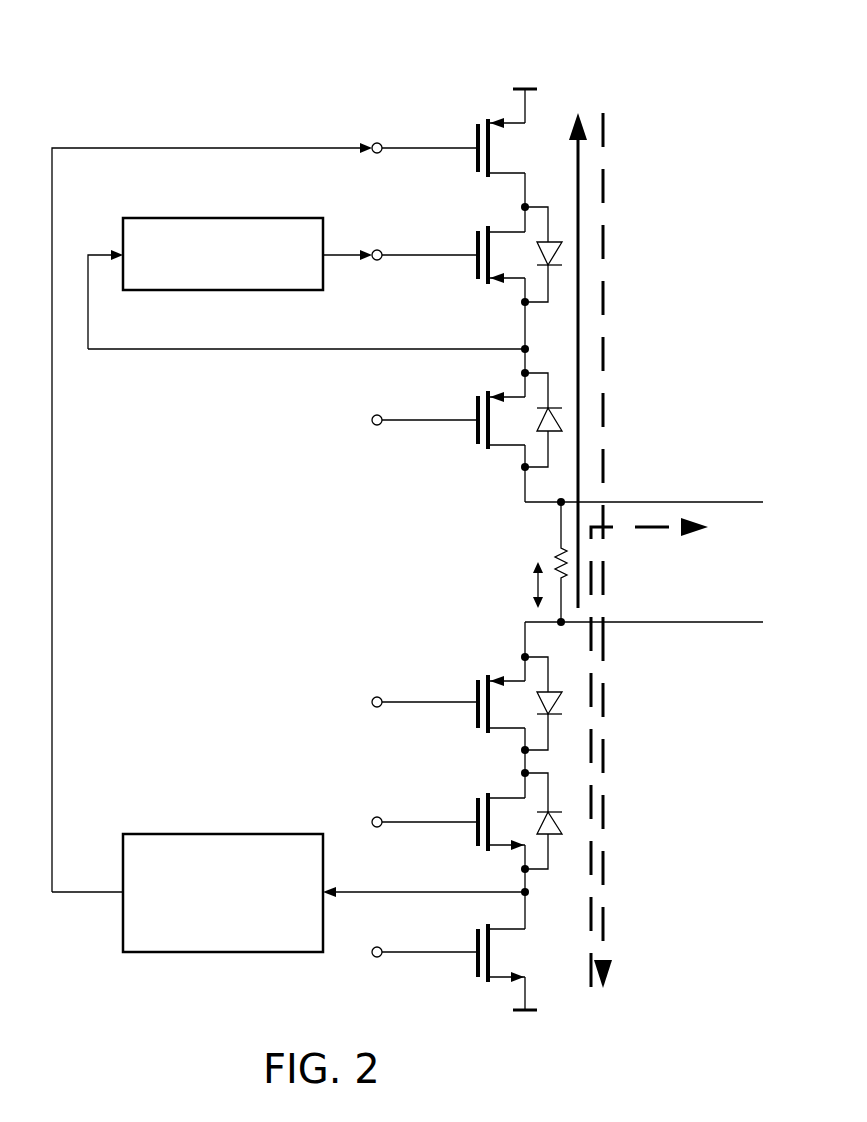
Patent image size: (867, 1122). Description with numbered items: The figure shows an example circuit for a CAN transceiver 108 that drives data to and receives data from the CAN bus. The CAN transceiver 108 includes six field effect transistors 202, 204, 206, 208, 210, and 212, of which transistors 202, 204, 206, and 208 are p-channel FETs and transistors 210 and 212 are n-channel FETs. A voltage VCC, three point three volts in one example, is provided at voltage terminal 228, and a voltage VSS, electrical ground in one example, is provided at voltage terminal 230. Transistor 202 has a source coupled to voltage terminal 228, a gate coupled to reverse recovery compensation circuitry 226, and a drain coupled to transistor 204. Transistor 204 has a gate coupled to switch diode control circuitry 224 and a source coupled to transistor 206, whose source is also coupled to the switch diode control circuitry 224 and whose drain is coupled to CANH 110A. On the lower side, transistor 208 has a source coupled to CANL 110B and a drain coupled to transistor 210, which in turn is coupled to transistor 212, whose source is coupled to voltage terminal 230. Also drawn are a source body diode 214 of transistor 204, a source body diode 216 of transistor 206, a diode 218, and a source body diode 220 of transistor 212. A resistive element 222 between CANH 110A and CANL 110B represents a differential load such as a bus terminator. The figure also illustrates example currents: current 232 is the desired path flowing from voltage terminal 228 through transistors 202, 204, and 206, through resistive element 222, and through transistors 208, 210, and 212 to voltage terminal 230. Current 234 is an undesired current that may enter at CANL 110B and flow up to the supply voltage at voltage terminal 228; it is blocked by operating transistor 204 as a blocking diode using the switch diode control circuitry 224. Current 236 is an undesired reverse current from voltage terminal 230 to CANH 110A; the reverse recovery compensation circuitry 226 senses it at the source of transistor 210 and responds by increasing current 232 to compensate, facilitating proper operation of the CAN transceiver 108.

The CAN transceiver 108 is at (106, 60).
The CANH 110A is at (725, 500).
The CANL 110B is at (725, 624).
The transistor 202 is at (473, 135).
The transistor 204 is at (473, 243).
The transistor 206 is at (473, 408).
The transistor 208 is at (473, 716).
The transistor 210 is at (473, 835).
The transistor 212 is at (473, 965).
The source body diode 214 is at (556, 262).
The source body diode 216 is at (556, 412).
The diode 218 is at (556, 710).
The source body diode 220 is at (556, 818).
The resistive element 222 is at (556, 561).
The switch diode control circuitry 224 is at (223, 218).
The reverse recovery compensation circuitry 226 is at (223, 952).
The voltage terminal 228 is at (538, 89).
The voltage terminal 230 is at (538, 1010).
The current 232 is at (605, 906).
The current 234 is at (579, 295).
The current 236 is at (655, 529).